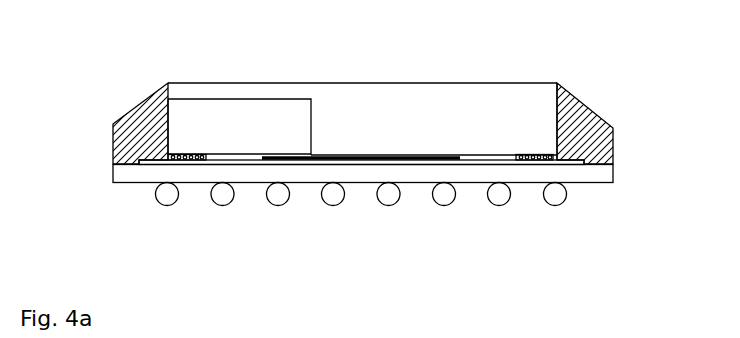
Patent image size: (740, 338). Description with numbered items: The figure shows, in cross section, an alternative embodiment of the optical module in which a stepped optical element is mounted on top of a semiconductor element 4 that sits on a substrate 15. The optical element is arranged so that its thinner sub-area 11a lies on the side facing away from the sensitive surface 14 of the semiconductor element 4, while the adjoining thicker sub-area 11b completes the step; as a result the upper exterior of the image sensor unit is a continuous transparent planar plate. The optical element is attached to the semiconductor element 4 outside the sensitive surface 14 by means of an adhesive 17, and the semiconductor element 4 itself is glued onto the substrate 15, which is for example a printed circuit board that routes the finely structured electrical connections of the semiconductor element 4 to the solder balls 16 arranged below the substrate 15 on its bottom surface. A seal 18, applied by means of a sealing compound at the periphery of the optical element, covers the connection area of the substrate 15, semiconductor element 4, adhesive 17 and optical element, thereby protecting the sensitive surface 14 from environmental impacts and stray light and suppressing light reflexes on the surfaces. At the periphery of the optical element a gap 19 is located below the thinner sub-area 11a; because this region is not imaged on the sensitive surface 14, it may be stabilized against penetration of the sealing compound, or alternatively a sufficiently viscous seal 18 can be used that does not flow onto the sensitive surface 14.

The semiconductor element 4 is at (153, 163).
The thinner sub-area 11a is at (258, 92).
The thicker sub-area 11b is at (453, 122).
The sensitive surface 14 is at (300, 162).
The substrate 15 is at (603, 177).
The solder balls 16 is at (164, 196).
The adhesive 17 is at (168, 155).
The seal 18 is at (613, 133).
The gap 19 is at (180, 114).